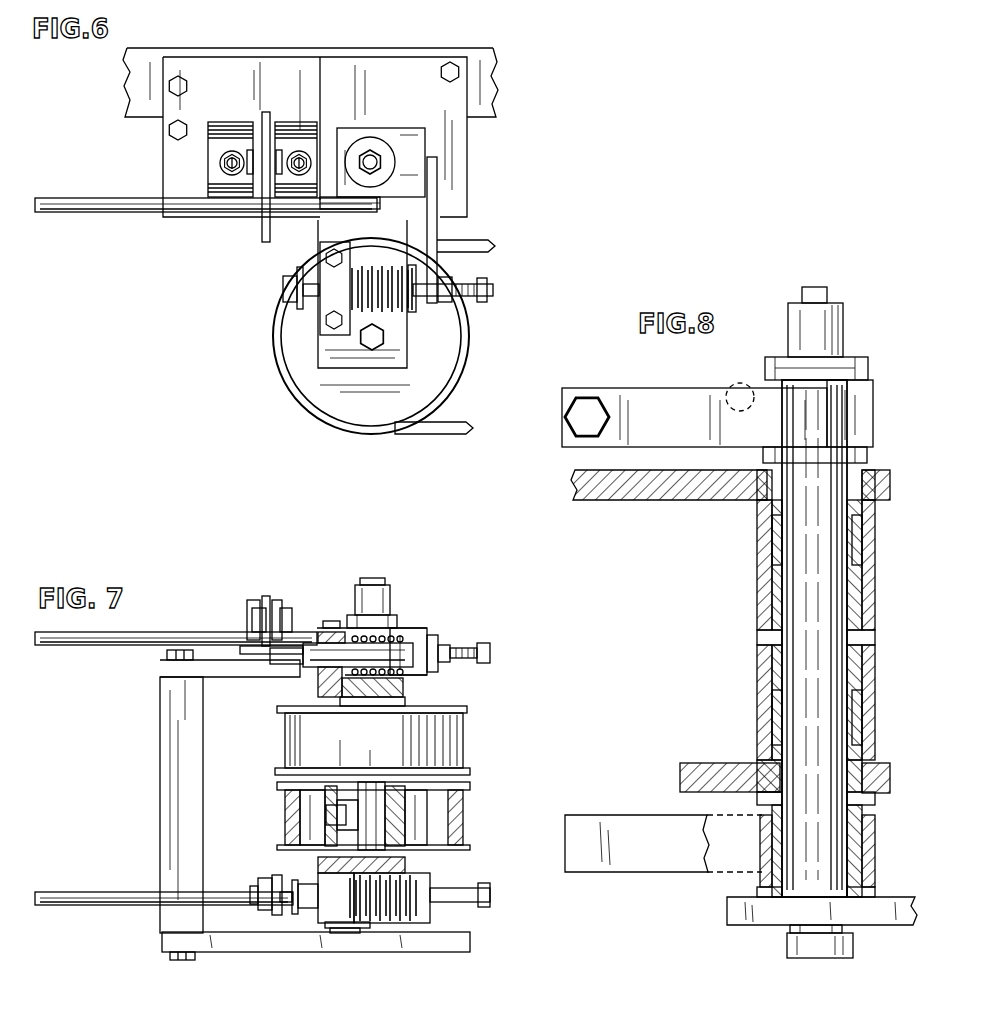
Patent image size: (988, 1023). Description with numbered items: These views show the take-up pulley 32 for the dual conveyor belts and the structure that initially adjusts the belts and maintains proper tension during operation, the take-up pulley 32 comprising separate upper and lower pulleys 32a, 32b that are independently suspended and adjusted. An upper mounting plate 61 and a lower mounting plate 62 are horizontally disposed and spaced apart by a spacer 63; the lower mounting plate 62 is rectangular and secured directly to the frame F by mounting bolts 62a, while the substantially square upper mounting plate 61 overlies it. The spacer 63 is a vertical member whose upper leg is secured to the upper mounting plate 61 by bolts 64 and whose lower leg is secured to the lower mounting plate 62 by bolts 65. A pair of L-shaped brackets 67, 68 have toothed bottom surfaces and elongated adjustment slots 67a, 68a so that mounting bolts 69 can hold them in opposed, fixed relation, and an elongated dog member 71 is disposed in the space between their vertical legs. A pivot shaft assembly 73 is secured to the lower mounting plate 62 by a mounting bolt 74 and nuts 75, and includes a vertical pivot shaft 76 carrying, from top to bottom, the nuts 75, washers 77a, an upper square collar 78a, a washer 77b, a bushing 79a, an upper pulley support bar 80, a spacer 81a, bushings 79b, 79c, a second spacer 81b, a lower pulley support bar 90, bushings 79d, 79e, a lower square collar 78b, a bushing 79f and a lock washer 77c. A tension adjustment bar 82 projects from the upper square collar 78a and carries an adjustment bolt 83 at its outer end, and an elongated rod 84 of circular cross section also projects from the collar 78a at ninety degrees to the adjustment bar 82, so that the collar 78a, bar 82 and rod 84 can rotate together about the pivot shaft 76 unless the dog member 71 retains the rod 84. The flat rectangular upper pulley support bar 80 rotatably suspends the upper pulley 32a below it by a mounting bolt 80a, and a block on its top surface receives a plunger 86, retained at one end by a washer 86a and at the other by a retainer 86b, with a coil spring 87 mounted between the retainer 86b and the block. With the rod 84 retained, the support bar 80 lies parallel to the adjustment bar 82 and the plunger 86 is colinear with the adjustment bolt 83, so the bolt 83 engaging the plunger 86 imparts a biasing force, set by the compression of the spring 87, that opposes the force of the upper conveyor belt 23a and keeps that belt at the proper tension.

In FIG. 6, the upper conveyor belt 23a is at (460, 436).
In FIG. 7, the take-up pulley 32 is at (470, 736).
In FIG. 7, the upper pulley 32a is at (470, 711).
In FIG. 7, the lower pulley 32b is at (476, 808).
In FIG. 6, the upper mounting plate 61 is at (266, 70).
In FIG. 6, the lower mounting plate 62 is at (386, 62).
In FIG. 7, the lower mounting plate 62 is at (258, 940).
In FIG. 8, the lower mounting plate 62 is at (752, 925).
In FIG. 6, the mounting bolts 62a is at (452, 66).
In FIG. 7, the spacer 63 is at (172, 760).
In FIG. 6, the bolts 64 is at (176, 124).
In FIG. 7, the bolts 64 is at (184, 650).
In FIG. 7, the bolts 65 is at (182, 960).
In FIG. 6, the L-shaped bracket 67 is at (214, 160).
In FIG. 7, the L-shaped bracket 67 is at (258, 602).
In FIG. 6, the adjustment slot 67a is at (234, 150).
In FIG. 6, the L-shaped bracket 68 is at (300, 178).
In FIG. 7, the L-shaped bracket 68 is at (276, 605).
In FIG. 6, the adjustment slot 68a is at (299, 150).
In FIG. 6, the mounting bolts 69 is at (302, 158).
In FIG. 6, the dog member 71 is at (262, 240).
In FIG. 7, the dog member 71 is at (268, 650).
In FIG. 8, the pivot shaft assembly 73 is at (758, 308).
In FIG. 8, the mounting bolt 74 is at (818, 960).
In FIG. 6, the nuts 75 is at (382, 160).
In FIG. 7, the nuts 75 is at (394, 622).
In FIG. 8, the nuts 75 is at (843, 345).
In FIG. 8, the vertical pivot shaft 76 is at (790, 605).
In FIG. 6, the washers 77a is at (378, 142).
In FIG. 7, the washers 77a is at (404, 628).
In FIG. 8, the washers 77a is at (866, 372).
In FIG. 8, the washer 77b is at (862, 458).
In FIG. 8, the lock washer 77c is at (852, 932).
In FIG. 6, the upper square collar 78a is at (415, 150).
In FIG. 7, the upper square collar 78a is at (430, 640).
In FIG. 8, the upper square collar 78a is at (858, 395).
In FIG. 8, the lower square collar 78b is at (872, 848).
In FIG. 8, the bushing 79a is at (896, 484).
In FIG. 8, the bushing 79b is at (872, 622).
In FIG. 8, the bushing 79c is at (865, 632).
In FIG. 8, the bushing 79d is at (870, 800).
In FIG. 8, the bushing 79e is at (872, 812).
In FIG. 8, the bushing 79f is at (868, 893).
In FIG. 6, the upper pulley support bar 80 is at (330, 352).
In FIG. 7, the upper pulley support bar 80 is at (318, 688).
In FIG. 8, the upper pulley support bar 80 is at (875, 500).
In FIG. 6, the mounting bolt 80a is at (386, 336).
In FIG. 8, the spacer 81a is at (870, 543).
In FIG. 8, the second spacer 81b is at (870, 673).
In FIG. 6, the tension adjustment bar 82 is at (440, 230).
In FIG. 7, the tension adjustment bar 82 is at (438, 650).
In FIG. 8, the tension adjustment bar 82 is at (565, 442).
In FIG. 6, the adjustment bolt 83 is at (495, 296).
In FIG. 7, the adjustment bolt 83 is at (490, 650).
In FIG. 8, the adjustment bolt 83 is at (590, 405).
In FIG. 6, the elongated rod 84 is at (122, 212).
In FIG. 7, the elongated rod 84 is at (118, 646).
In FIG. 8, the elongated rod 84 is at (738, 382).
In FIG. 7, the plunger 86 is at (342, 700).
In FIG. 7, the washer 86a is at (327, 700).
In FIG. 7, the retainer 86b is at (410, 672).
In FIG. 6, the coil spring 87 is at (374, 268).
In FIG. 7, the coil spring 87 is at (380, 700).
In FIG. 8, the lower pulley support bar 90 is at (893, 772).
In FIG. 6, the frame F is at (498, 62).